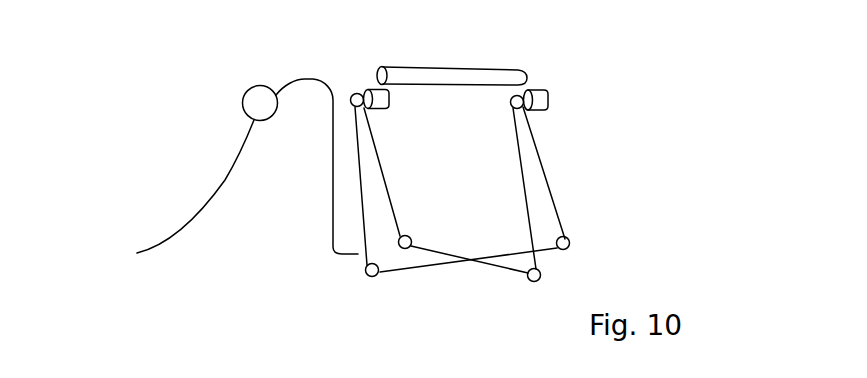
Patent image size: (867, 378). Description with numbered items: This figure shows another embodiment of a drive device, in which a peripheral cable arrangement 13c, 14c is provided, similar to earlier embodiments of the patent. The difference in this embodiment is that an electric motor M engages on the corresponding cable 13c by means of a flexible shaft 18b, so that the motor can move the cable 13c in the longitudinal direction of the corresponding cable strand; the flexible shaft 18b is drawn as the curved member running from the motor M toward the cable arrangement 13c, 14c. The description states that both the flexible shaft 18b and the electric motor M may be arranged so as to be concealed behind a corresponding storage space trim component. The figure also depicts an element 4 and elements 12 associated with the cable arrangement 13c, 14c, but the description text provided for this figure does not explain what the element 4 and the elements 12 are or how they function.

The roller 4 is at (432, 67).
The pin / roller 12 is at (370, 82).
The cable 13c is at (358, 190).
The peripheral cable arrangement 14c is at (362, 104).
The flexible shaft 18b is at (220, 190).